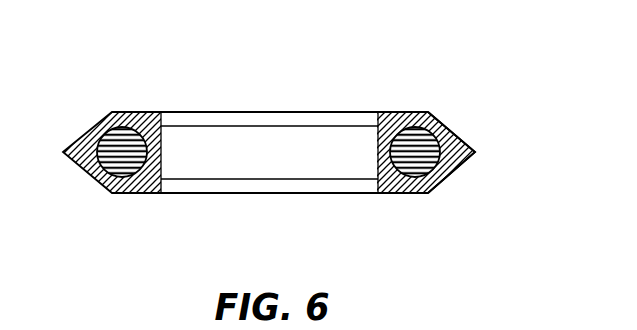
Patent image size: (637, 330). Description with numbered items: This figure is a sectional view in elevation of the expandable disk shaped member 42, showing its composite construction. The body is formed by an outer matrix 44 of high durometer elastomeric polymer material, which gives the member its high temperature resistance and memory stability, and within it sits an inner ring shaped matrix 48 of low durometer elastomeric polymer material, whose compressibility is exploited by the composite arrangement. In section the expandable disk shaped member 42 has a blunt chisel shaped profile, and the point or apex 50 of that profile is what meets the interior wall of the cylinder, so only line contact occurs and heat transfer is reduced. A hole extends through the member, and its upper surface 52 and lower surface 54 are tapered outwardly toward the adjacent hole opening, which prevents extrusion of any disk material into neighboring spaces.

The expandable disk shaped member 42 is at (83, 86).
The outer matrix 44 is at (456, 133).
The inner ring shaped matrix 48 is at (412, 127).
The point or apex 50 is at (477, 152).
The upper surface 52 is at (170, 112).
The lower surface 54 is at (162, 193).